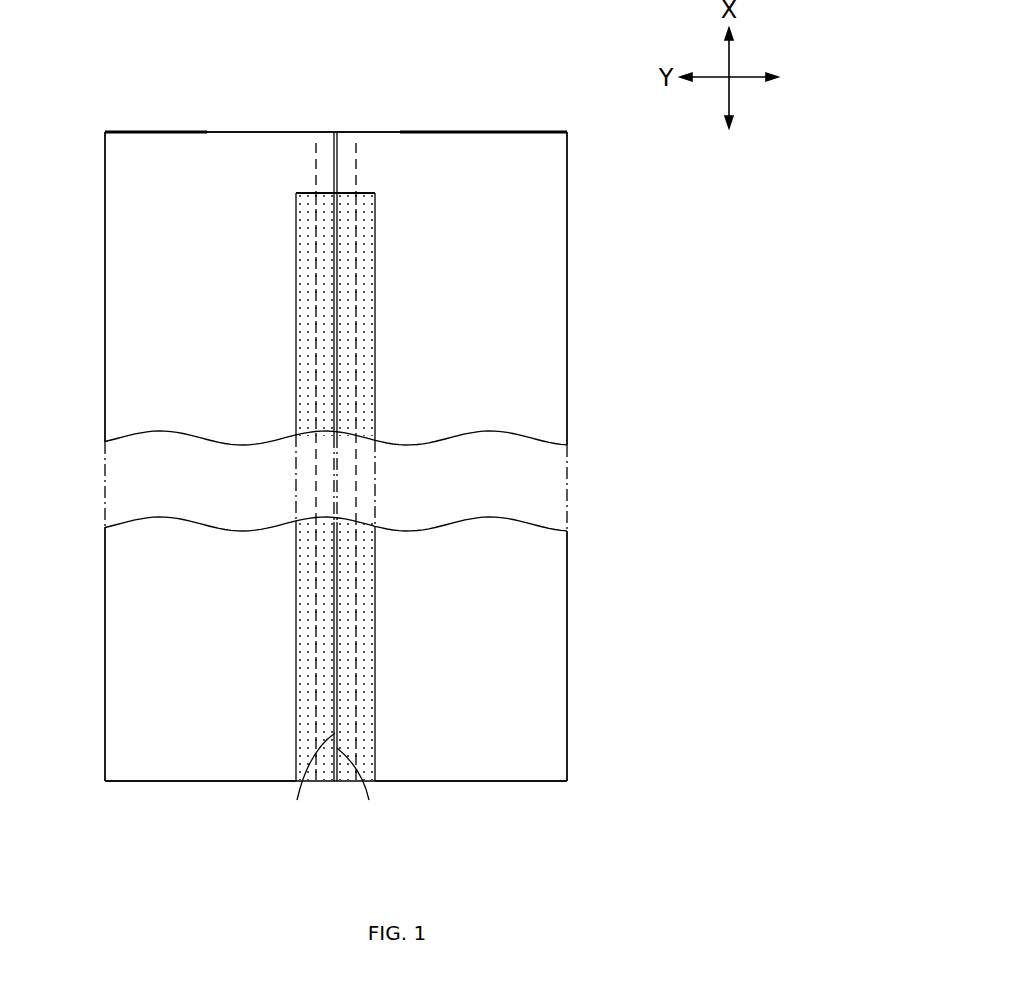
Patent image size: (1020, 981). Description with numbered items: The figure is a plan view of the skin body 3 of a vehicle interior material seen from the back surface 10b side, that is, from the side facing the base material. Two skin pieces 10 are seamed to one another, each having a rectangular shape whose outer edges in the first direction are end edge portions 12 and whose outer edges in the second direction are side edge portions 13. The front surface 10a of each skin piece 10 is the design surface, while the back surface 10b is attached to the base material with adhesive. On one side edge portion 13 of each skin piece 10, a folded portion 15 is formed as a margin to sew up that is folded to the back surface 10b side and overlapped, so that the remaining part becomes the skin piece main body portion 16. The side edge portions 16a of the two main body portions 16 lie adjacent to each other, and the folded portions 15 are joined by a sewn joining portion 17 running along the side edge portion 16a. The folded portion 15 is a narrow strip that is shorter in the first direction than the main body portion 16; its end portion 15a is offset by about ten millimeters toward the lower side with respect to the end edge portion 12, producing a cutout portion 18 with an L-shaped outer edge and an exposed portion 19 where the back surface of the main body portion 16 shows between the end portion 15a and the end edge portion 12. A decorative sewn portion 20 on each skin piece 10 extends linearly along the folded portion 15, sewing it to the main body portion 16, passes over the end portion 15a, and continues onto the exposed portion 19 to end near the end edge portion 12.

The skin body 3 is at (552, 92).
The skin piece 10 is at (125, 312).
The front surface 10a is at (296, 565).
The back surface 10b is at (125, 594).
The end edge portion 12 is at (208, 132).
The side edge portion 13 is at (105, 208).
The folded portion 15 is at (303, 248).
The end portion 15a is at (296, 193).
The skin piece main body portion 16 is at (146, 148).
The side edge portion 16a is at (337, 783).
The joining portion 17 is at (340, 627).
The cutout portion 18 is at (333, 187).
The exposed portion 19 is at (308, 158).
The sewn portion 20 is at (318, 305).